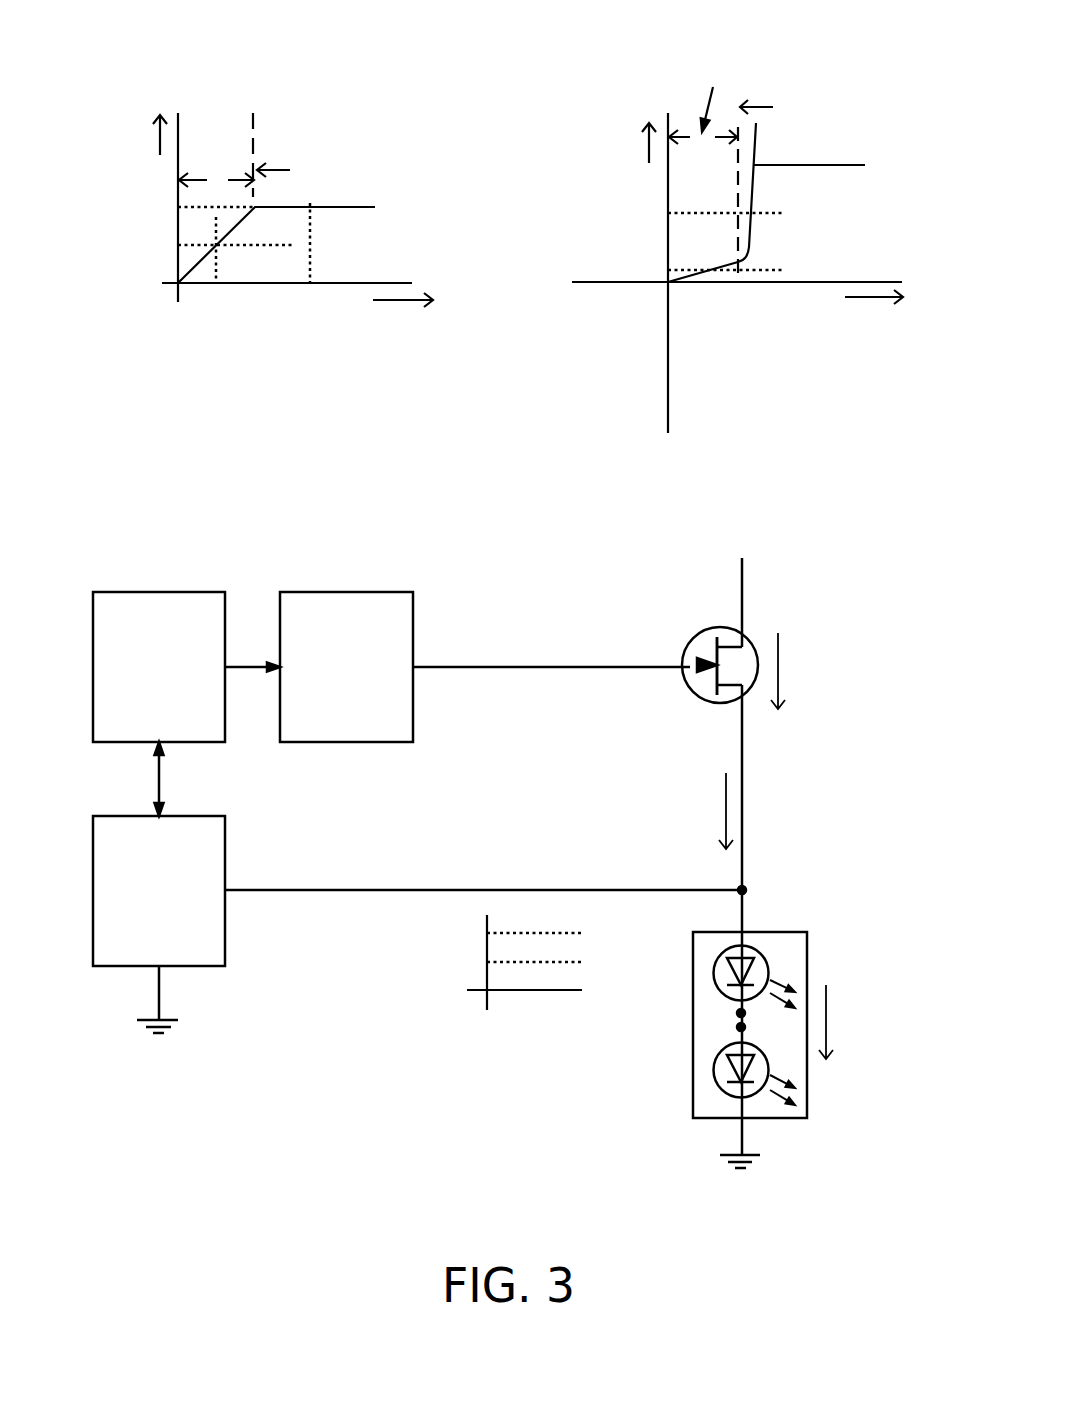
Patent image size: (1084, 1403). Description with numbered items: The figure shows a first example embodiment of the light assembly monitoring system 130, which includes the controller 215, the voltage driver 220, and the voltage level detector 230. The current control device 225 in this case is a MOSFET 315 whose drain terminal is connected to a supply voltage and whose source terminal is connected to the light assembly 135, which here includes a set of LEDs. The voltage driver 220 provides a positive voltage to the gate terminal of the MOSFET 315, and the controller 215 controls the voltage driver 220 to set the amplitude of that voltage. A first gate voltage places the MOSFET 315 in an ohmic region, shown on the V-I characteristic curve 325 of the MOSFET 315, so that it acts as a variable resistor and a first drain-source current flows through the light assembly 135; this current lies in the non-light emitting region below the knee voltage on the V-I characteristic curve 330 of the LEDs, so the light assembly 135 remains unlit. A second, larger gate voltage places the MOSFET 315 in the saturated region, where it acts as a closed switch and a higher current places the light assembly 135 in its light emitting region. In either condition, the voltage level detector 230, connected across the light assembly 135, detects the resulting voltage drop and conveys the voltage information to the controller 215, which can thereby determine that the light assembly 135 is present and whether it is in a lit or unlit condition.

The light assembly monitoring system 130 is at (509, 846).
The light assembly 135 is at (838, 938).
The controller 215 is at (217, 621).
The voltage driver 220 is at (402, 621).
The current control device 225 is at (778, 619).
The voltage level detector 230 is at (215, 841).
The MOSFET 315 is at (698, 698).
The V-I characteristic curve of the MOSFET 325 is at (122, 316).
The V-I characteristic curve of the LEDs 330 is at (856, 374).